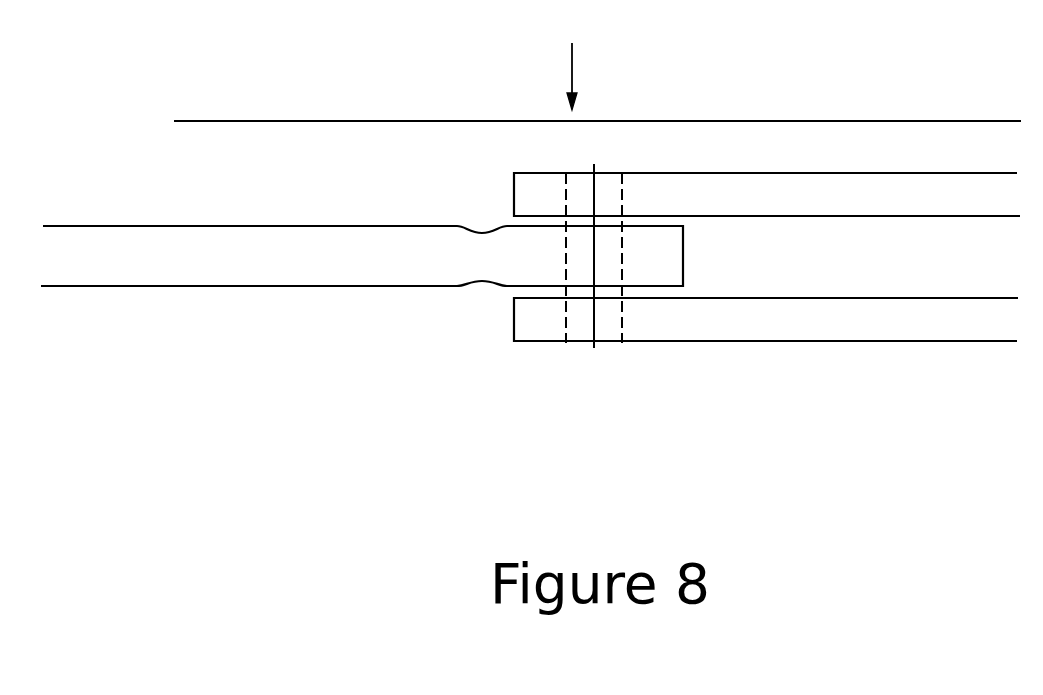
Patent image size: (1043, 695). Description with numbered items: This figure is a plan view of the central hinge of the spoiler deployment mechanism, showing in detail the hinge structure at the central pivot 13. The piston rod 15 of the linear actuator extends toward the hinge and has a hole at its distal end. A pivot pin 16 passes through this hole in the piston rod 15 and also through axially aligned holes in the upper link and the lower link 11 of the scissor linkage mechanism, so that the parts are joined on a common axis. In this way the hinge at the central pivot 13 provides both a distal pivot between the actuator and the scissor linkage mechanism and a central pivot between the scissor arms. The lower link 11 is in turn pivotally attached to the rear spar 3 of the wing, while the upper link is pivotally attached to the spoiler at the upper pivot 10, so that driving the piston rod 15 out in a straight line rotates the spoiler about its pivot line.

The rear spar 3 is at (300, 124).
The central pivot 13 is at (573, 62).
The lower link 11 is at (829, 182).
The upper pivot 10 is at (837, 306).
The piston rod 15 is at (183, 232).
The pivot pin 16 is at (593, 348).